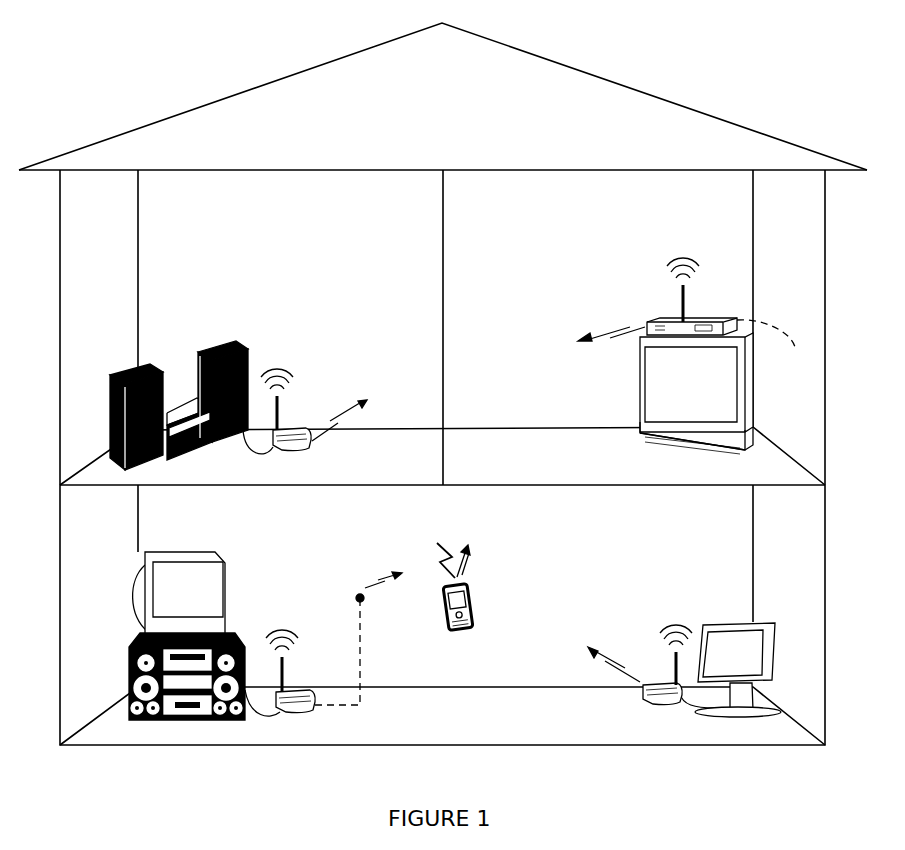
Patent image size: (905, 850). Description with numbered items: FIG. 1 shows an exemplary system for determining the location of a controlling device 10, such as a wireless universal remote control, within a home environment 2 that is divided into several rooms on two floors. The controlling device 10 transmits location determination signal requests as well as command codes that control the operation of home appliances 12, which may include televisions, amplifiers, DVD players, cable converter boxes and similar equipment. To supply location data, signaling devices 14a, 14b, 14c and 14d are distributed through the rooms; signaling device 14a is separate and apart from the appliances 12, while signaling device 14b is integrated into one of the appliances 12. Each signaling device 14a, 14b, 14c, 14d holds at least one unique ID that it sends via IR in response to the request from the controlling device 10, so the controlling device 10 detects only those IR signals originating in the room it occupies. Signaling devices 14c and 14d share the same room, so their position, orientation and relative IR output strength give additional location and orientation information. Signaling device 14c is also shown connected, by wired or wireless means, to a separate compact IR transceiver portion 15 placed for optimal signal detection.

The environment 2 is at (263, 85).
The controlling device 10 is at (474, 615).
The home appliances 12 is at (122, 357).
The signaling device 14a is at (300, 428).
The signaling device 14b is at (683, 318).
The signaling device 14c is at (313, 703).
The signaling device 14d is at (645, 688).
The compact IR transceiver portion 15 is at (360, 598).